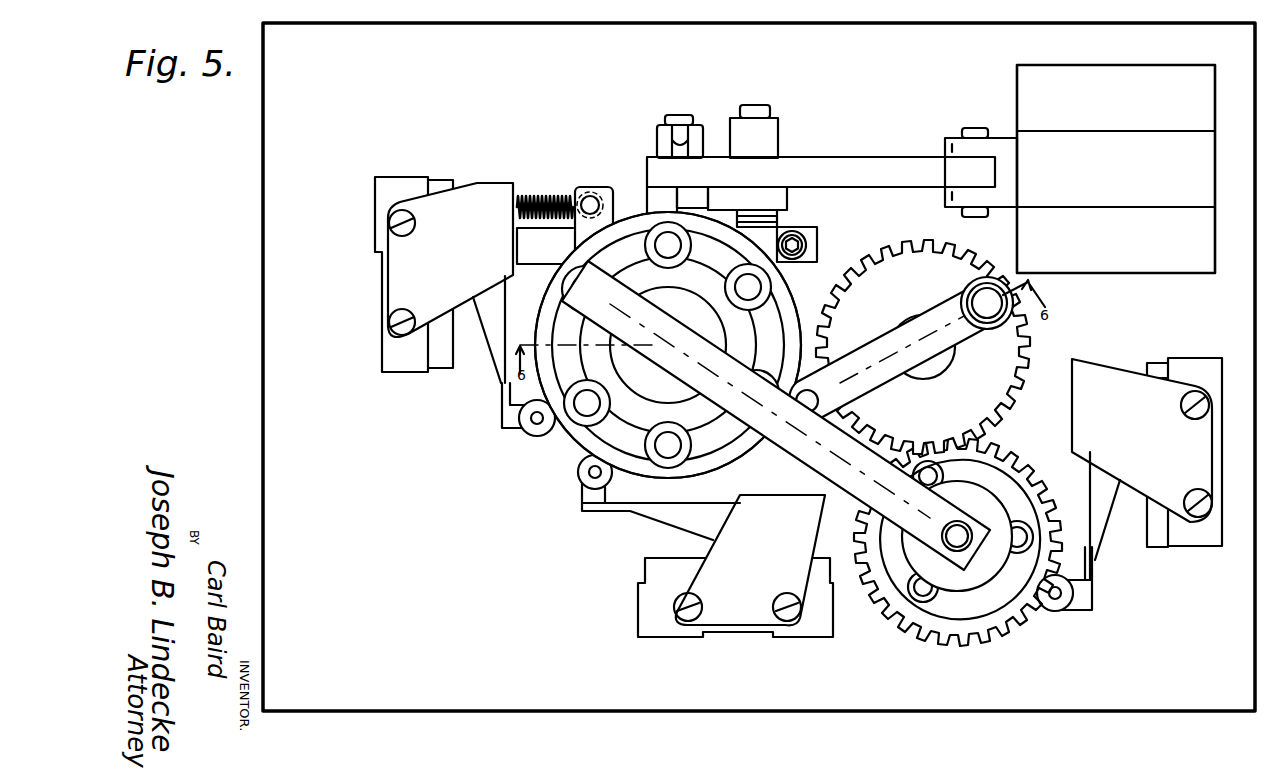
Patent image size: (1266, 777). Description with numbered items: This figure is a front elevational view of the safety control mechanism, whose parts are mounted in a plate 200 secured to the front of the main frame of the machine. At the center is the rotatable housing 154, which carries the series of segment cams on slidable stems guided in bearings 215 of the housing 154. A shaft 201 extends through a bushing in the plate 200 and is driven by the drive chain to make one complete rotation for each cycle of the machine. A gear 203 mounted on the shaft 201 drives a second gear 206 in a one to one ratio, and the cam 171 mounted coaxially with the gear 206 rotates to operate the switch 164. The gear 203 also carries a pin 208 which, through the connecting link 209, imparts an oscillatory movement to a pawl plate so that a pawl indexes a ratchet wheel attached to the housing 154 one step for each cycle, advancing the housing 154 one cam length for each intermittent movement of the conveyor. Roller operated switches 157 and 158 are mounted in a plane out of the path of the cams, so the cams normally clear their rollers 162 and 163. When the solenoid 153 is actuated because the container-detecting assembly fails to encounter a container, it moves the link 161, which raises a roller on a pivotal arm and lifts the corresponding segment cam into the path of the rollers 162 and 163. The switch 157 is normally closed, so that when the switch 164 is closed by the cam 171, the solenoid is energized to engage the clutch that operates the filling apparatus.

The solenoid 153 is at (1202, 272).
The rotatable housing 154 is at (562, 440).
The roller operated switch 157 is at (493, 352).
The roller operated switch 158 is at (657, 515).
The link 161 is at (855, 168).
The roller 162 is at (535, 434).
The roller 163 is at (583, 479).
The switch 164 is at (1122, 527).
The cam 171 is at (1032, 605).
The plate 200 is at (285, 383).
The shaft 201 is at (943, 376).
The gear 203 is at (1028, 337).
The gear 206 is at (998, 625).
The pin 208 is at (990, 280).
The connecting link 209 is at (955, 348).
The bearings 215 is at (655, 230).